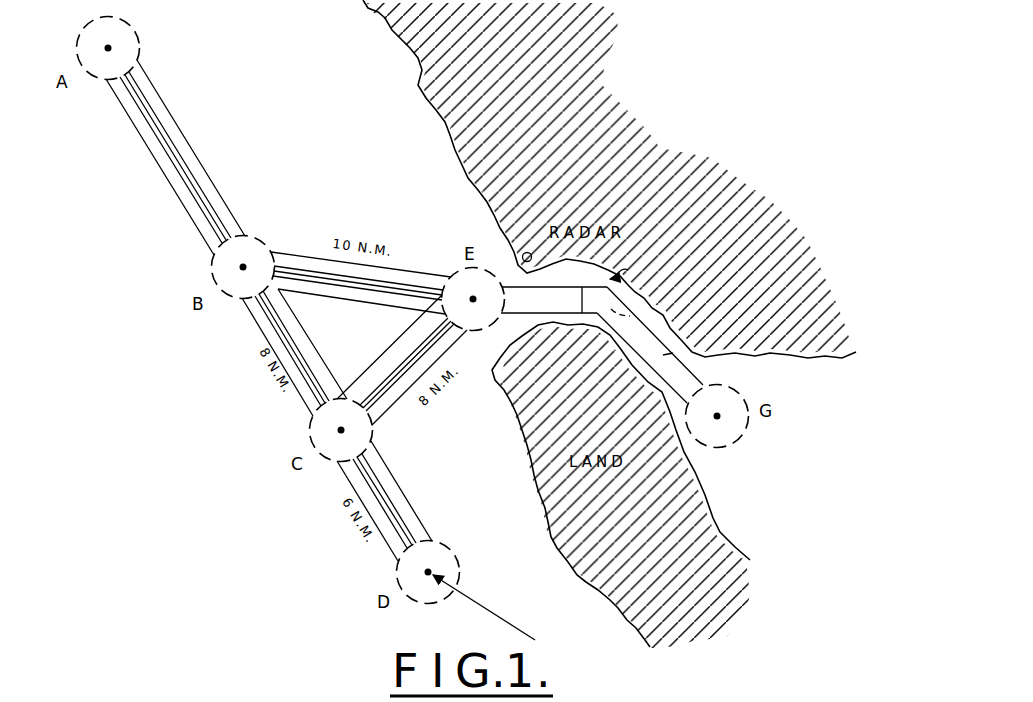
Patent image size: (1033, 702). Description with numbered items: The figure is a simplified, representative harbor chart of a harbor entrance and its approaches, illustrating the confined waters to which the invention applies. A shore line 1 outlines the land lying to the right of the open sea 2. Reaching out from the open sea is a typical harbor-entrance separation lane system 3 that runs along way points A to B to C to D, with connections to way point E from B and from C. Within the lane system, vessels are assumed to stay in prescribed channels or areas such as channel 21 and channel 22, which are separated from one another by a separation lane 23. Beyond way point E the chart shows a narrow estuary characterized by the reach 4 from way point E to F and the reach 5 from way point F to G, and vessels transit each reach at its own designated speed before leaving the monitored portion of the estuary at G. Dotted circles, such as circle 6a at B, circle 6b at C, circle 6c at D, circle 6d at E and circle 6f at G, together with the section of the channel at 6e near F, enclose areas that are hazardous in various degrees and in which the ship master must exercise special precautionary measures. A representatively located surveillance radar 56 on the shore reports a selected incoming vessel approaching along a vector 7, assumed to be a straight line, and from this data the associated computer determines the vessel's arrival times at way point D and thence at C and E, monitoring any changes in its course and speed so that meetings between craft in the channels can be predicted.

The shore line 1 is at (402, 58).
The open sea 2 is at (84, 274).
The harbor-entrance separation lane system 3 is at (180, 83).
The reach 4 is at (532, 309).
The reach 5 is at (683, 331).
The dotted circle 6a is at (254, 238).
The dotted circle 6b is at (340, 399).
The dotted circle 6c is at (449, 547).
The dotted circle 6d is at (458, 270).
The section of the channel 6e is at (641, 305).
The dotted circle 6f is at (731, 445).
The vector 7 is at (490, 611).
The prescribed channel 21 is at (418, 511).
The prescribed channel 22 is at (346, 479).
The separation lane 23 is at (377, 470).
The surveillance radar 56 is at (528, 253).